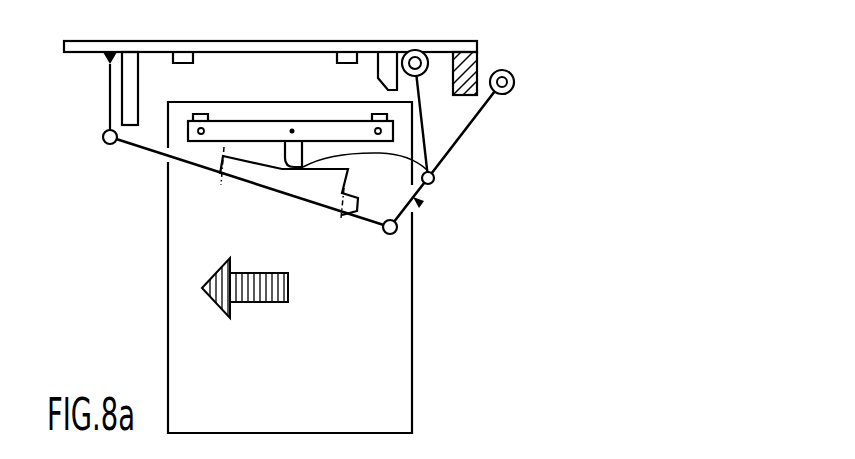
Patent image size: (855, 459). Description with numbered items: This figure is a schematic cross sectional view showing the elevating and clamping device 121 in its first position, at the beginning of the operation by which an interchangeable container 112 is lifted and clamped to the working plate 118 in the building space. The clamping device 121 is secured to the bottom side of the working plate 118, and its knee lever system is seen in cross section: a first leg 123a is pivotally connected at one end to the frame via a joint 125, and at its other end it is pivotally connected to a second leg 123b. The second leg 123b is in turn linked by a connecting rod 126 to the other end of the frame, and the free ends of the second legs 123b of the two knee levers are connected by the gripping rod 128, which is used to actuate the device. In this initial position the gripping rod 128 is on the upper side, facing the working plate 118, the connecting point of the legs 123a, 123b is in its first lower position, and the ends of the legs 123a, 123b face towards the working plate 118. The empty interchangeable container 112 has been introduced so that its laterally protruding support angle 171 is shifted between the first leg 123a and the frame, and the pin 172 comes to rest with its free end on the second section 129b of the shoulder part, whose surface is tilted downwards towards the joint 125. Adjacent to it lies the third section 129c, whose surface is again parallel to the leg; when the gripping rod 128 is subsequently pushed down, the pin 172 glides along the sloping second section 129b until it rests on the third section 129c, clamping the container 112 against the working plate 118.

The interchangeable container 112 is at (412, 358).
The working plate 118 is at (454, 42).
The elevating and clamping device 121 is at (418, 202).
The first leg 123a is at (186, 162).
The second leg 123b is at (490, 100).
The joint 125 is at (104, 144).
The connecting rod 126 is at (421, 112).
The gripping rod 128 is at (515, 78).
The second section 129b is at (436, 172).
The third section 129c is at (244, 169).
The support angle 171 is at (227, 120).
The pin 172 is at (282, 170).